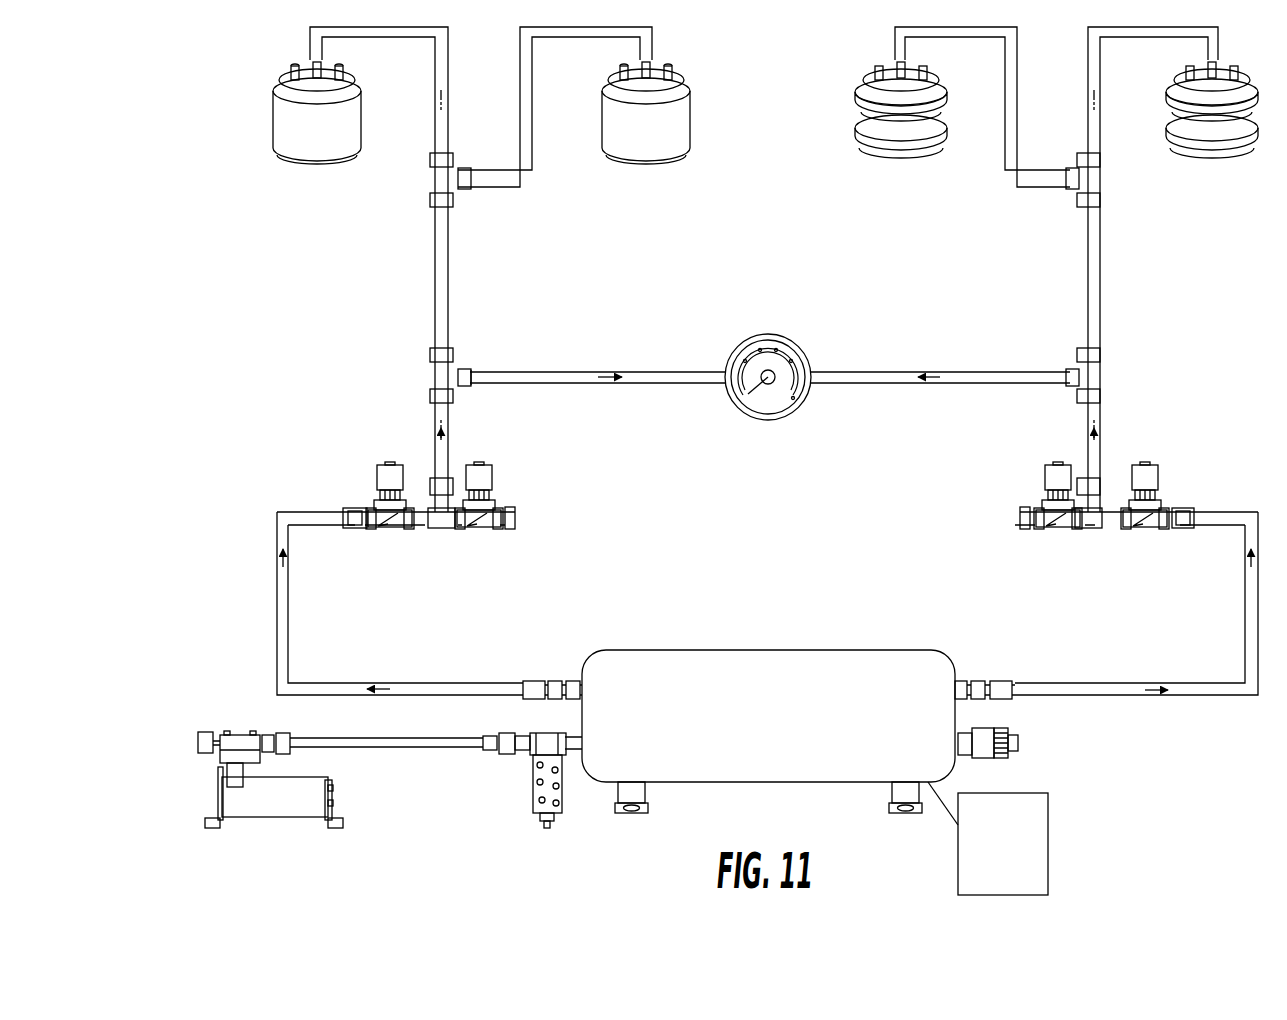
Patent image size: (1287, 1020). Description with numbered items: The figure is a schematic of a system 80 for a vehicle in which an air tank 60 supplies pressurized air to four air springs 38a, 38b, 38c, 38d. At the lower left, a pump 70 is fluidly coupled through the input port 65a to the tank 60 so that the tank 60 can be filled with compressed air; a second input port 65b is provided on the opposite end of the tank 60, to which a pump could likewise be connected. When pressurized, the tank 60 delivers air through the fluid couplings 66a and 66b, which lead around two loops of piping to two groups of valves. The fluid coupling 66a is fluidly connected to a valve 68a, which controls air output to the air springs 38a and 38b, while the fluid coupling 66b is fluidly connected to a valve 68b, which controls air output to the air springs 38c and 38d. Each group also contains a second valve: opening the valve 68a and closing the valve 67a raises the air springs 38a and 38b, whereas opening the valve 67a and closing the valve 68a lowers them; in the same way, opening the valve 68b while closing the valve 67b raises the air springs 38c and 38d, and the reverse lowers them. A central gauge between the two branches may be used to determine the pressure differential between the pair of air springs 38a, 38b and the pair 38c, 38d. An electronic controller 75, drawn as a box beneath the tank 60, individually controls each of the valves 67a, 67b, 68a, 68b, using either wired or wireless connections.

The system 80 is at (175, 87).
The air spring 38a is at (317, 160).
The air spring 38b is at (646, 160).
The air spring 38c is at (901, 160).
The air spring 38d is at (1212, 160).
The valve 68a is at (377, 482).
The valve 67a is at (517, 517).
The valve 67b is at (1018, 518).
The valve 68b is at (1157, 482).
The air tank 60 is at (781, 732).
The fluid coupling 66a is at (563, 677).
The fluid coupling 66b is at (970, 677).
The input port 65a is at (572, 755).
The input port 65b is at (960, 762).
The electronic controller 75 is at (1050, 842).
The pump 70 is at (272, 818).